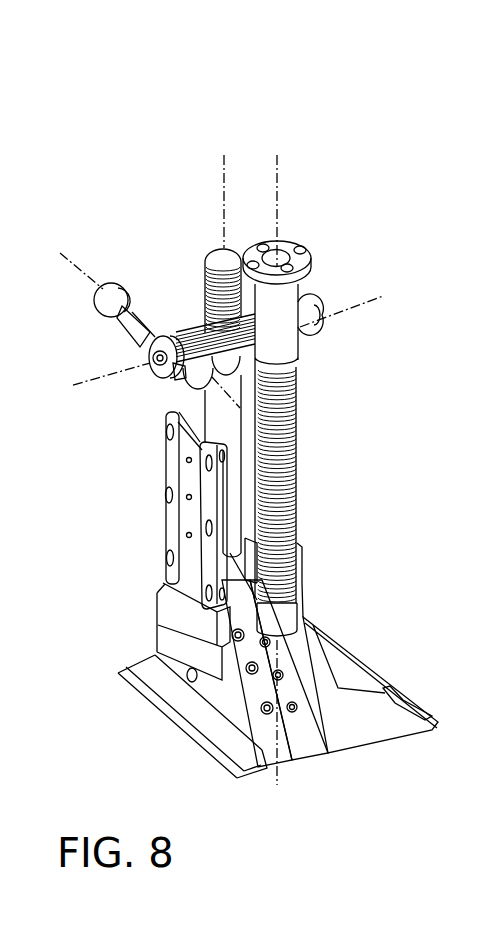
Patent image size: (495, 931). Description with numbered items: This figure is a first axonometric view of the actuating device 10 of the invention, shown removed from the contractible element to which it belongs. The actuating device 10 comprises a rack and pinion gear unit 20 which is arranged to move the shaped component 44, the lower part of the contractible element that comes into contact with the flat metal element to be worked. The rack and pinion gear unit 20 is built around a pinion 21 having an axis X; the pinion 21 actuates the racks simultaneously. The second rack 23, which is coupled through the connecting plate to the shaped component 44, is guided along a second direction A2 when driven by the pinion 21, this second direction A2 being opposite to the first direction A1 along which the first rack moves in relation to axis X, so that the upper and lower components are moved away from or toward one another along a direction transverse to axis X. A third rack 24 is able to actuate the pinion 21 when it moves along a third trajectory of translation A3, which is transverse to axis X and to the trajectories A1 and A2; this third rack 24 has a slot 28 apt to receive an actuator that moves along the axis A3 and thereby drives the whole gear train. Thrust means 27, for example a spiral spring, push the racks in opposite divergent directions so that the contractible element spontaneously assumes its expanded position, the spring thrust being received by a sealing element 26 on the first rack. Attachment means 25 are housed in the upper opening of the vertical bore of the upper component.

The actuating device 10 is at (396, 307).
The rack and pinion gear unit 20 is at (342, 410).
The pinion 21 is at (310, 328).
The second rack 23 is at (207, 266).
The third rack 24 is at (155, 332).
The attachment means 25 is at (281, 299).
The sealing element 26 is at (292, 618).
The thrust means 27 is at (282, 512).
The slot 28 is at (116, 315).
The shaped component 44 is at (355, 670).
The first direction A1 is at (297, 470).
The second direction A2 is at (205, 201).
The third trajectory of translation A3 is at (86, 266).
The axis X is at (228, 352).